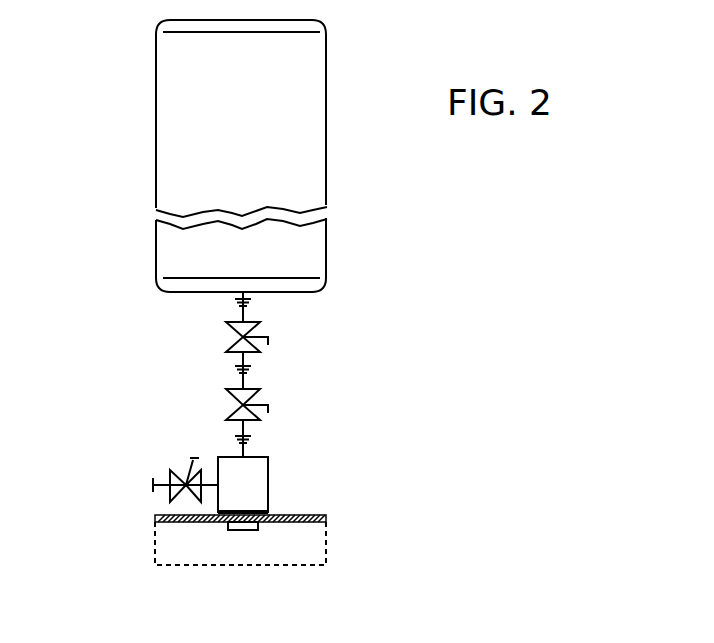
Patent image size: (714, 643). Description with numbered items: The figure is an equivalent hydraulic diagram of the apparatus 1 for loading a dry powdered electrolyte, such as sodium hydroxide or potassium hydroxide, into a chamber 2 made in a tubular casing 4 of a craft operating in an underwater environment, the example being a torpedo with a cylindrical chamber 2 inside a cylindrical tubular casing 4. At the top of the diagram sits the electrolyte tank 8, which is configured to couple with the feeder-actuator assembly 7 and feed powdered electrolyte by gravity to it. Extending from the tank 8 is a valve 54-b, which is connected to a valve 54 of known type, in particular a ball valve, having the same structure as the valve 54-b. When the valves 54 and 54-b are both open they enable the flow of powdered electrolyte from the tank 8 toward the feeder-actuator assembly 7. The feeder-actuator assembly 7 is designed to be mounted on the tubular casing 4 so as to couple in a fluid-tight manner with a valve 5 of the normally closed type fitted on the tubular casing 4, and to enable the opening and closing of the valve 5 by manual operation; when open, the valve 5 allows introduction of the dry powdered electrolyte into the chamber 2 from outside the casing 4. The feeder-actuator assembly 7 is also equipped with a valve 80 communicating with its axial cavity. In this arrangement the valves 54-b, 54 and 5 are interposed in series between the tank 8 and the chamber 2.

The electrolyte tank 8 is at (262, 123).
The valve 54-b is at (283, 341).
The valve 54 is at (211, 398).
The apparatus 1 is at (356, 370).
The valve 80 is at (177, 455).
The feeder-actuator assembly 7 is at (258, 478).
The tubular casing 4 is at (324, 496).
The valve 5 is at (216, 539).
The chamber 2 is at (292, 530).